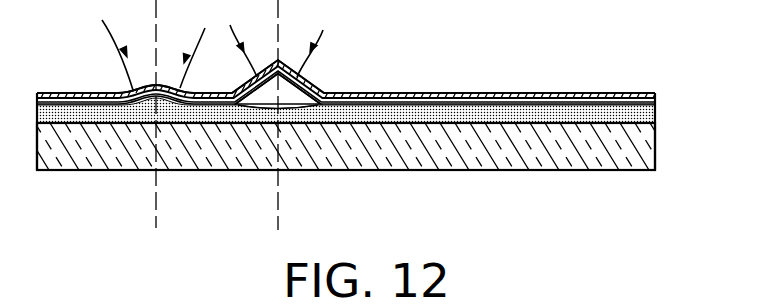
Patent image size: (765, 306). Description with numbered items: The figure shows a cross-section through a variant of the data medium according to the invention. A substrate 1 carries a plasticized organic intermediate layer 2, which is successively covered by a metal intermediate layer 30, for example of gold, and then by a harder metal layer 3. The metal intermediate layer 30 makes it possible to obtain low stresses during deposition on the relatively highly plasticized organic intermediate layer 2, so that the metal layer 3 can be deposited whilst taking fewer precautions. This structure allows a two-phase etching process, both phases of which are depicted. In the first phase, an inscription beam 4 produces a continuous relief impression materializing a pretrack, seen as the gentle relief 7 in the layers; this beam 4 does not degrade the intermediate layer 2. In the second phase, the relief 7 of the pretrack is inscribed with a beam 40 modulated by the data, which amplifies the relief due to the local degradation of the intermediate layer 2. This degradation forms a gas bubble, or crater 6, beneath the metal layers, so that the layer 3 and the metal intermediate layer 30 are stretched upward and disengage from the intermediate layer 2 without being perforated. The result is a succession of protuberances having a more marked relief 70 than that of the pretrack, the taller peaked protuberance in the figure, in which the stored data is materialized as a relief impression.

The substrate 1 is at (647, 150).
The intermediate layer 2 is at (650, 118).
The metal layer 3 is at (548, 93).
The metal intermediate layer 30 is at (658, 103).
The inscription beam 4 is at (115, 43).
The beam modulated by the data 40 is at (242, 43).
The crater 6 is at (263, 100).
The relief of the pretrack 7 is at (153, 86).
The more marked relief 70 is at (303, 79).